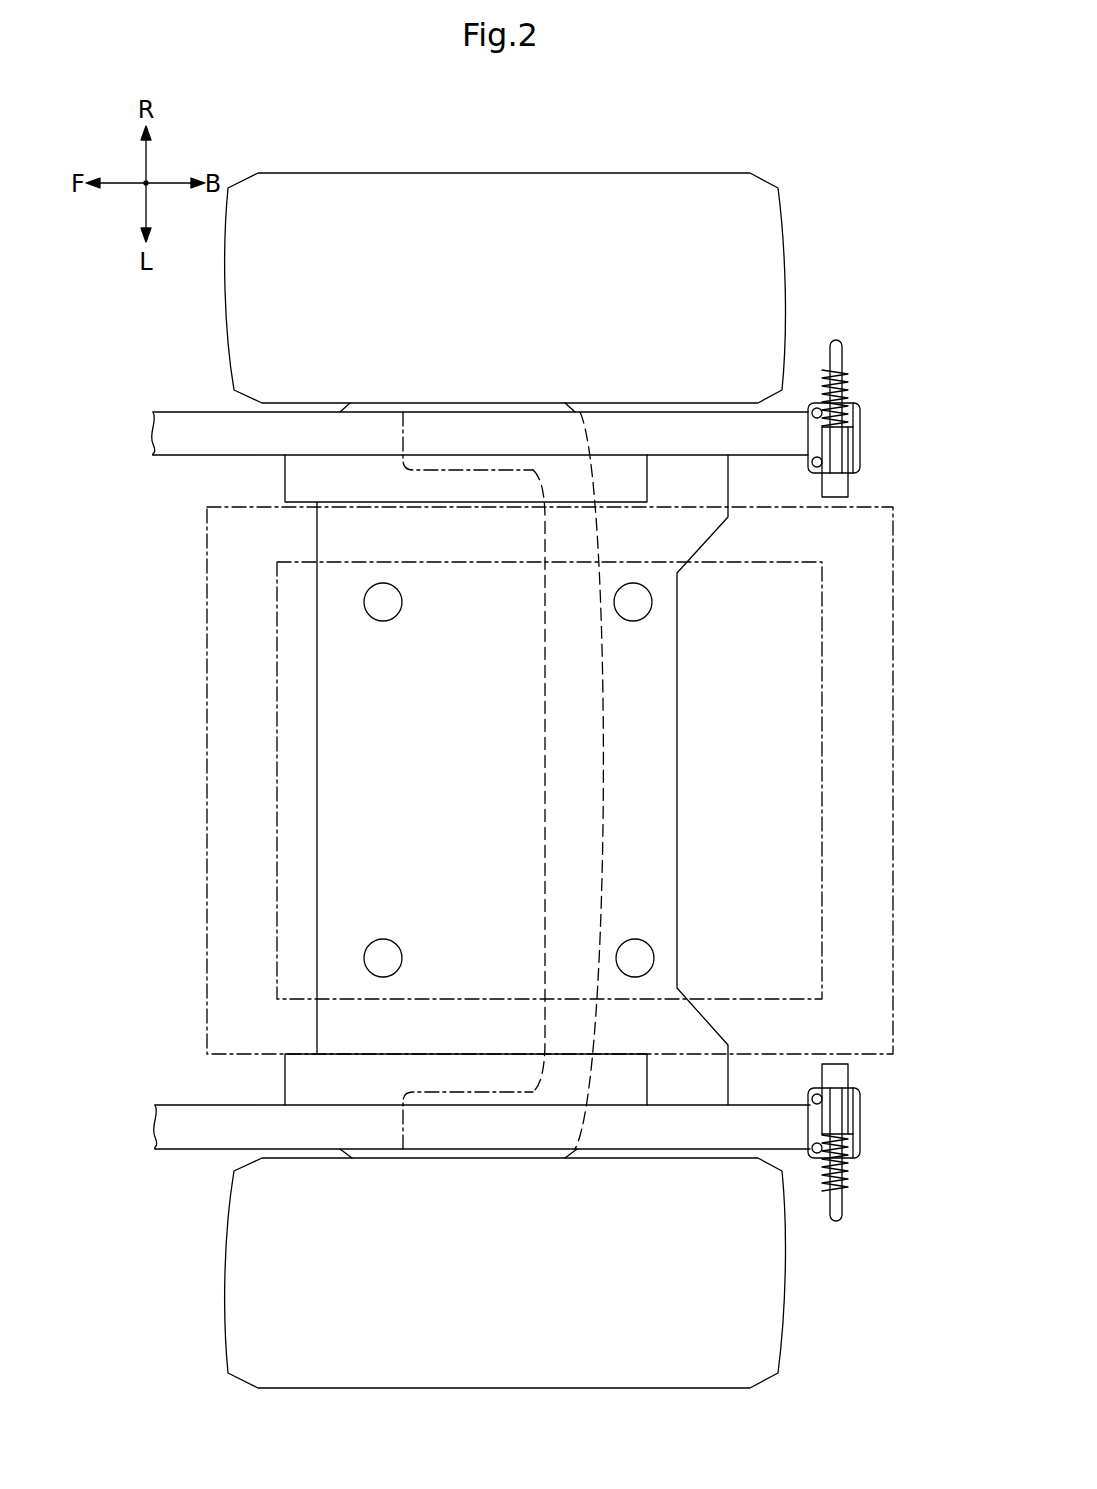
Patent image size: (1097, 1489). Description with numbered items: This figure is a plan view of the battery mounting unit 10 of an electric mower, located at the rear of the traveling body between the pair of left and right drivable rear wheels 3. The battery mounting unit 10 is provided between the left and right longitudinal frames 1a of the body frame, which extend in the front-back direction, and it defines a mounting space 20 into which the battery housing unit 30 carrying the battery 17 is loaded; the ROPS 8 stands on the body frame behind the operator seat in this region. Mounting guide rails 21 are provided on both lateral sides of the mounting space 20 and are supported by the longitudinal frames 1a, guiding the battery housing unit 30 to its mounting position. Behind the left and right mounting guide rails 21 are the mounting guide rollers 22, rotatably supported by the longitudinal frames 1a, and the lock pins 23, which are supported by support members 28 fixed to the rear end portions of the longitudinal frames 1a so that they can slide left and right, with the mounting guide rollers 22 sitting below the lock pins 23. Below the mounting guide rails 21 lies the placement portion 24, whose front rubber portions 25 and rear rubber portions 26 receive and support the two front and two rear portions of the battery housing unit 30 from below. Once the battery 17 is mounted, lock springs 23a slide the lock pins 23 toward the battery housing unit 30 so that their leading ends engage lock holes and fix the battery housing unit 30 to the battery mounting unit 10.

The battery mounting unit 10 is at (832, 154).
The rear wheels 3 is at (228, 316).
The longitudinal frames 1a is at (198, 425).
The ROPS 8 is at (548, 787).
The battery 17 is at (277, 765).
The mounting space 20 is at (236, 588).
The mounting guide rails 21 is at (500, 490).
The mounting guide rollers 22 is at (852, 486).
The lock pins 23 is at (836, 340).
The lock springs 23a is at (848, 386).
The placement portion 24 is at (667, 742).
The front rubber portions 25 is at (383, 613).
The rear rubber portions 26 is at (633, 613).
The support members 28 is at (858, 420).
The battery housing unit 30 is at (207, 745).